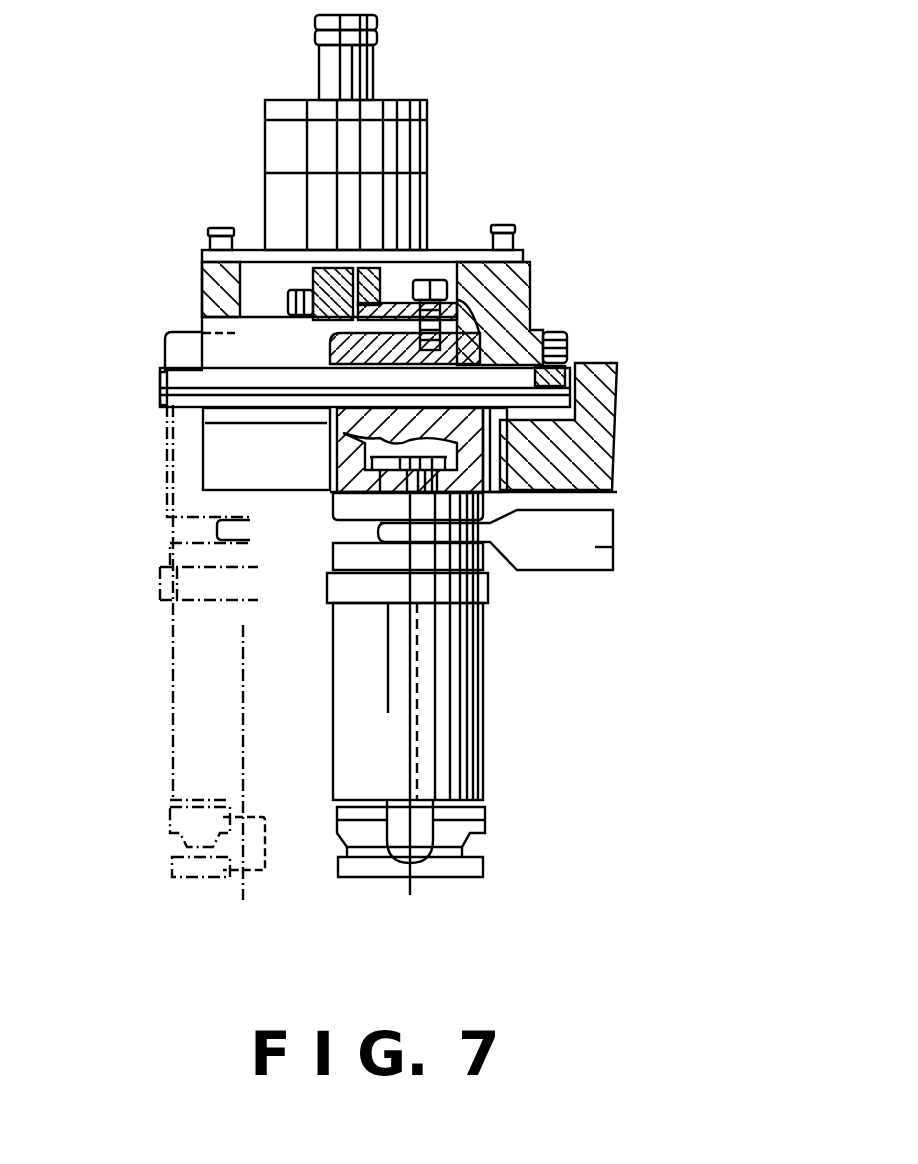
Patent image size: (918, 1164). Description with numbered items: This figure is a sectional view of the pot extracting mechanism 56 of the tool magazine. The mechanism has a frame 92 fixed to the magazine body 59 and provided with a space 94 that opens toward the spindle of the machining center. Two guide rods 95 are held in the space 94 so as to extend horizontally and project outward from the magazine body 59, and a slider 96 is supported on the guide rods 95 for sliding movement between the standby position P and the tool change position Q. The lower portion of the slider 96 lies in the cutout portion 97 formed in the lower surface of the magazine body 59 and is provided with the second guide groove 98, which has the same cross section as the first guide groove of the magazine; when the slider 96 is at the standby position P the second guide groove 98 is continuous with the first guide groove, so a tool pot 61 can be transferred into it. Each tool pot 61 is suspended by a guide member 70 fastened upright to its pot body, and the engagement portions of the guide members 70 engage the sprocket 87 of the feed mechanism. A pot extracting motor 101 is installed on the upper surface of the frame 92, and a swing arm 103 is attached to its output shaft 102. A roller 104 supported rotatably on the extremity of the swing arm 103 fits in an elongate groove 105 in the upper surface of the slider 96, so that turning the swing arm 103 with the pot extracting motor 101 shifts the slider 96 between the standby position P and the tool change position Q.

The pot extracting motor 101 is at (427, 133).
The output shaft 102 is at (345, 268).
The swing arm 103 is at (318, 268).
The roller 104 is at (480, 335).
The elongate groove 105 is at (430, 280).
The frame 92 is at (527, 347).
The pot extracting mechanism 56 is at (603, 353).
The guide rods 95 is at (235, 380).
The space 94 is at (232, 445).
The cutout portion 97 is at (218, 470).
The second guide groove 98 is at (337, 420).
The slider 96 is at (340, 495).
The magazine body 59 is at (602, 455).
The guide member 70 is at (605, 483).
The sprocket 87 is at (592, 545).
The tool pot 61 is at (299, 652).
The tool change position Q is at (243, 710).
The standby position P is at (410, 697).